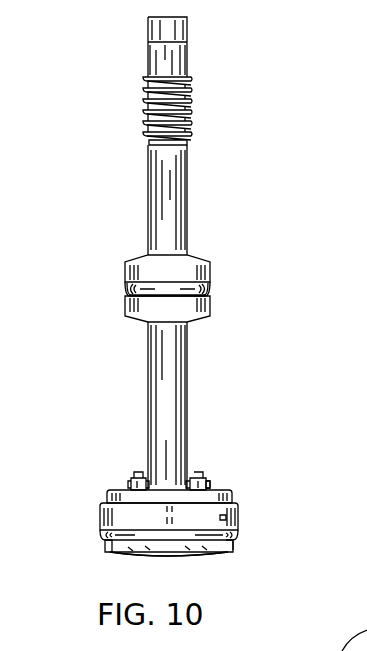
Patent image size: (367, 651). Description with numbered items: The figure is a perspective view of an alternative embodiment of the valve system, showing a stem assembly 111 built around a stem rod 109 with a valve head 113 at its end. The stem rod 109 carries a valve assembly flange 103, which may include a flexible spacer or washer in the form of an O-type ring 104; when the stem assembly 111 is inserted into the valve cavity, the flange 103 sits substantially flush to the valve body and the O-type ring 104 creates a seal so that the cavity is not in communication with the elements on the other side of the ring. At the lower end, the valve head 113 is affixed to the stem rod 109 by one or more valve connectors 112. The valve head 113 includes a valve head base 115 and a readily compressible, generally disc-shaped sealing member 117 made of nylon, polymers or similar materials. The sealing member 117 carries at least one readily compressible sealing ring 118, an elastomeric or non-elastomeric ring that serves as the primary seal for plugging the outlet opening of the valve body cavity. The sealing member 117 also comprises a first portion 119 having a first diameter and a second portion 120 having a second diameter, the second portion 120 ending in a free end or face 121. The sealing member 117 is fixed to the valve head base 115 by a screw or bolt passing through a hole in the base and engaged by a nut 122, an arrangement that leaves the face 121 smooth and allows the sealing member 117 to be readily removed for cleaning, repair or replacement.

The valve assembly flange 103 is at (212, 258).
The O-type ring 104 is at (128, 290).
The stem rod 109 is at (187, 182).
The stem assembly 111 is at (270, 100).
The valve connector 112 is at (200, 470).
The valve head 113 is at (80, 487).
The valve head base 115 is at (110, 490).
The sealing member 117 is at (250, 508).
The sealing ring 118 is at (238, 546).
The first portion 119 is at (226, 517).
The second portion 120 is at (107, 545).
The face 121 is at (140, 553).
The nut 122 is at (212, 487).